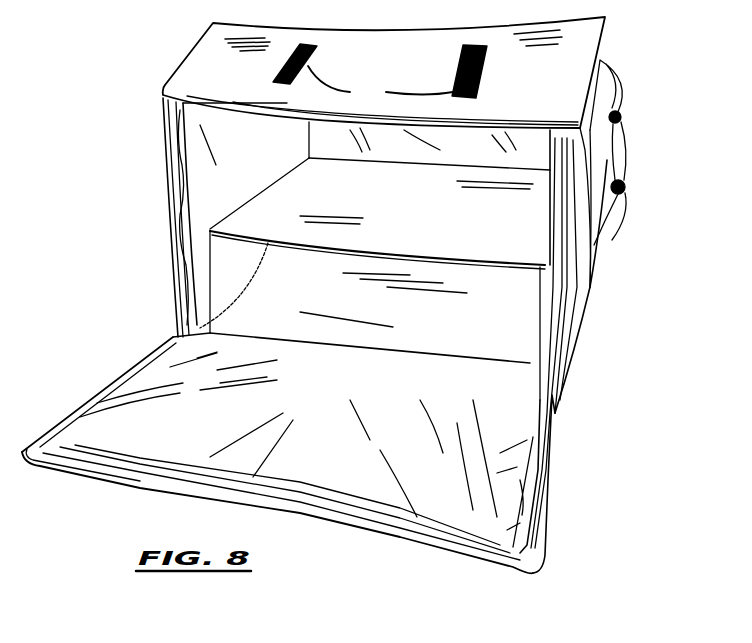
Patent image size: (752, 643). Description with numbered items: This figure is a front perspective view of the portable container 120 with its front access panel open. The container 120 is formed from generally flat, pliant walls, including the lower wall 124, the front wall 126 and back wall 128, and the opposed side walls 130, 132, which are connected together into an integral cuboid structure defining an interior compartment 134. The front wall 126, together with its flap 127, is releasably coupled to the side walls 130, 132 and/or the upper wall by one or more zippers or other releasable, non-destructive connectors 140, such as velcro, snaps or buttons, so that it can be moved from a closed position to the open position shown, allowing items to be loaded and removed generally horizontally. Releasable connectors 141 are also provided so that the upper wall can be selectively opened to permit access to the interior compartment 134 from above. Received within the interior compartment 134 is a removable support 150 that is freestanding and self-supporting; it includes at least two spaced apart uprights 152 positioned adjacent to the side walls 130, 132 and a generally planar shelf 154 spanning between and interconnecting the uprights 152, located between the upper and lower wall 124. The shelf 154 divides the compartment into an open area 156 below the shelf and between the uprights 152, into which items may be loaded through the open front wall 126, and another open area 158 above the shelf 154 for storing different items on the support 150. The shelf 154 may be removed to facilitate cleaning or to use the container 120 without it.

The portable container 120 is at (560, 527).
The lower wall 124 is at (500, 327).
The front wall 126 is at (367, 480).
The flap 127 is at (570, 87).
The back wall 128 is at (333, 142).
The side wall 130 is at (208, 197).
The side wall 132 is at (588, 245).
The interior compartment 134 is at (170, 267).
The releasable connector 140 is at (543, 413).
The releasable connector 141 is at (384, 72).
The removable support 150 is at (292, 244).
The uprights 152 is at (550, 310).
The shelf 154 is at (507, 250).
The open area 156 is at (440, 322).
The open area 158 is at (533, 153).